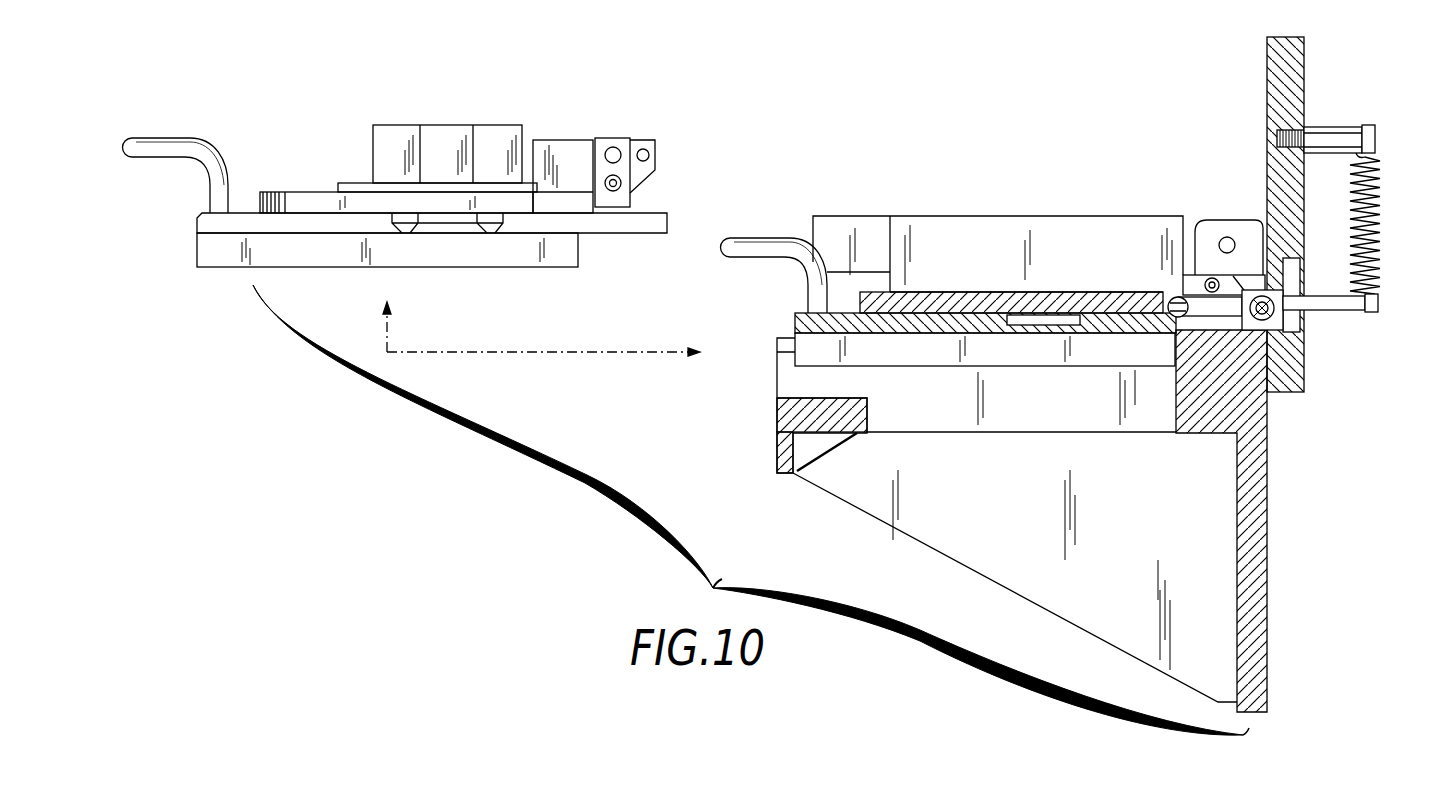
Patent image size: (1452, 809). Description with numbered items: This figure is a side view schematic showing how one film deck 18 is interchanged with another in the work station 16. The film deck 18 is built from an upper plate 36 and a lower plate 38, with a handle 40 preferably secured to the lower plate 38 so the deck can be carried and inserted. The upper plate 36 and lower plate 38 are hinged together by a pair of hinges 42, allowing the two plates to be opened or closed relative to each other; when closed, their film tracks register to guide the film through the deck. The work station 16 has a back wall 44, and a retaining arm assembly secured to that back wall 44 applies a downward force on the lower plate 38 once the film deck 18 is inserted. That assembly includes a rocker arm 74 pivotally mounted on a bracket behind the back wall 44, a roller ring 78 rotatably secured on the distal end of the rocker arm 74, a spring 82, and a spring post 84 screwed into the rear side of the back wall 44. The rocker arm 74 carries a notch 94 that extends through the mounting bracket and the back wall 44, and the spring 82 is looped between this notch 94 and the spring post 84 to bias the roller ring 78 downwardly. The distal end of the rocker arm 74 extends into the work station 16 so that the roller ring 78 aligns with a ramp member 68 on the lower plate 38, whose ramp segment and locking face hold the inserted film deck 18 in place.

The work station 16 is at (777, 428).
The film deck 18 is at (223, 268).
The upper plate 36 is at (295, 190).
The lower plate 38 is at (197, 214).
The handle 40 is at (143, 137).
The hinges 42 is at (568, 140).
The back wall 44 is at (1266, 56).
The ramp member 68 is at (1210, 318).
The rocker arm 74 is at (1335, 312).
The roller ring 78 is at (1170, 294).
The spring 82 is at (1380, 172).
The spring post 84 is at (1338, 128).
The notch 94 is at (1368, 311).